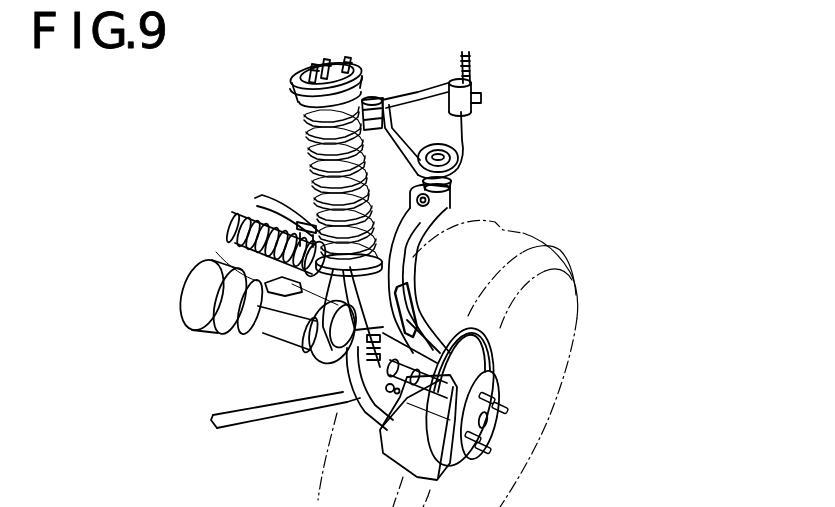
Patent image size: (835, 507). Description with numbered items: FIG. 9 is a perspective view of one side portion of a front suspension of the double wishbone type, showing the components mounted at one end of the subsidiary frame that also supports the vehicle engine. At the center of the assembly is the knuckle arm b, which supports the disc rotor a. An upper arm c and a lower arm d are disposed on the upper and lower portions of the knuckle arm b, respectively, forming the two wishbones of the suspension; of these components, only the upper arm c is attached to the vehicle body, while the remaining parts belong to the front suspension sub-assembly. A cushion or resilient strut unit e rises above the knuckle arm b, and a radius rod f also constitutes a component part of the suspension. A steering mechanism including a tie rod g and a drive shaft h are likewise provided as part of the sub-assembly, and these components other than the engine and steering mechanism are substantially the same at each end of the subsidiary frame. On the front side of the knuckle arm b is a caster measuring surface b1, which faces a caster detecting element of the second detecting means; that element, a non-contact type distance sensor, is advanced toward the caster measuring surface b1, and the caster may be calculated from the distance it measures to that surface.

The disc rotor a is at (494, 383).
The knuckle arm b is at (412, 235).
The caster measuring surface b1 is at (400, 310).
The upper arm c is at (447, 129).
The lower arm d is at (233, 251).
The resilient strut unit e is at (304, 134).
The radius rod f is at (257, 423).
The tie rod g is at (268, 331).
The drive shaft h is at (288, 346).